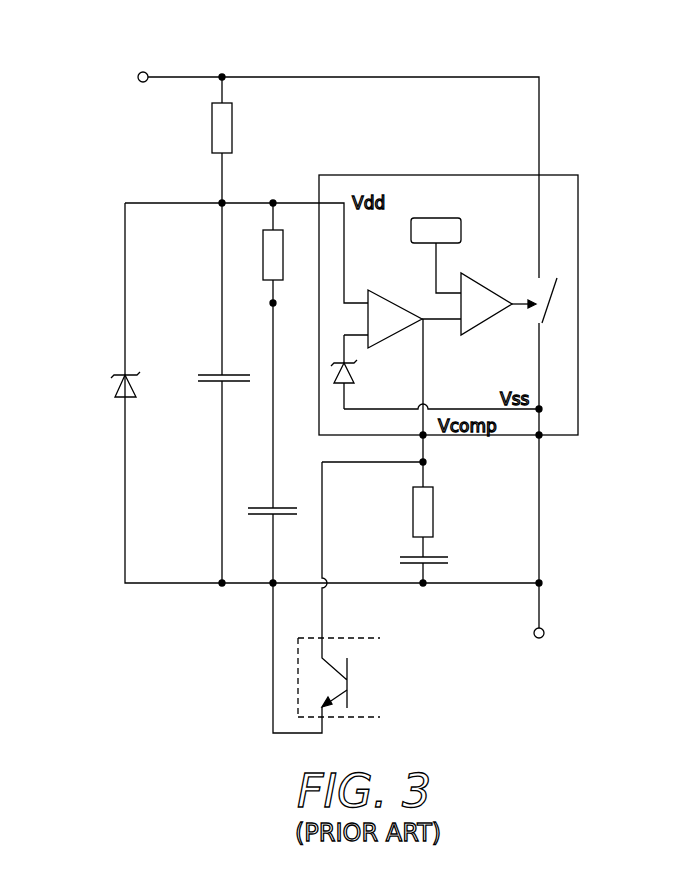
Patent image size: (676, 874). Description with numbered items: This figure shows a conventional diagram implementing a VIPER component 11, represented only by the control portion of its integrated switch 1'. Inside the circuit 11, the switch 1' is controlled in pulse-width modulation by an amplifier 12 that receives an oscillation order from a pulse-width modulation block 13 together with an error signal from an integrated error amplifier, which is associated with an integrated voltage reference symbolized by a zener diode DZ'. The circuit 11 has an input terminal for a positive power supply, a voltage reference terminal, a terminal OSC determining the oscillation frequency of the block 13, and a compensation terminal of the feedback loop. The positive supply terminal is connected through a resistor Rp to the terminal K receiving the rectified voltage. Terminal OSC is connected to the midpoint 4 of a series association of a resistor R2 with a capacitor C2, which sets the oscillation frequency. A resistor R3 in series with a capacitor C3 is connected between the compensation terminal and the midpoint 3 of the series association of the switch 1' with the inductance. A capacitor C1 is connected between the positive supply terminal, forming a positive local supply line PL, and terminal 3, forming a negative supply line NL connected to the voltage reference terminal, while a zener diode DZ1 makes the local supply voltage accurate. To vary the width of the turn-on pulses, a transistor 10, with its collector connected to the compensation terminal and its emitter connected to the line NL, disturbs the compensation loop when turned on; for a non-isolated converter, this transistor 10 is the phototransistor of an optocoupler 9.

The VIPER component 11 is at (578, 200).
The integrated switch 1' is at (585, 305).
The amplifier 12 is at (490, 322).
The block (PWM) 13 is at (461, 228).
The terminal OSC is at (320, 303).
The zener diode DZ' is at (359, 377).
The midpoint 4 is at (275, 306).
The terminal K is at (143, 72).
The resistor Rp is at (236, 128).
The positive local supply line PL is at (293, 202).
The resistor R2 is at (259, 255).
The zener diode DZ1 is at (103, 384).
The capacitor C1 is at (211, 374).
The capacitor C2 is at (266, 498).
The resistor R3 is at (438, 512).
The capacitor C3 is at (437, 560).
The optocoupler 9 is at (350, 638).
The transistor 10 is at (308, 668).
The negative supply line NL is at (457, 583).
The midpoint 3 is at (546, 630).